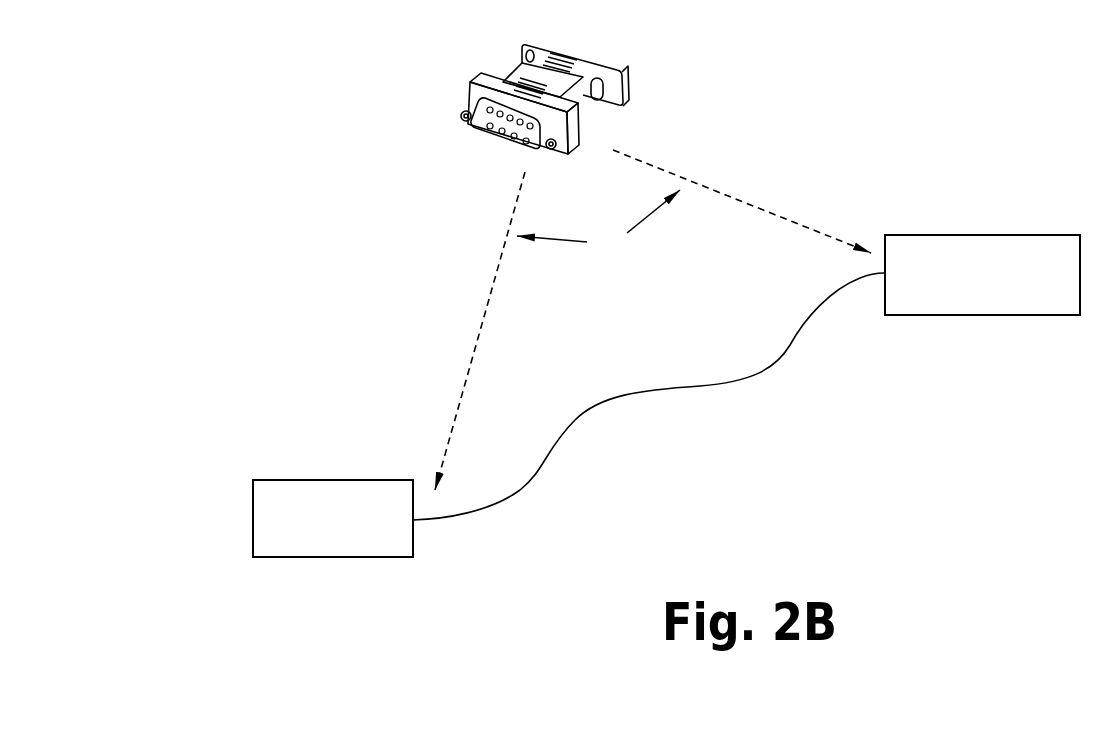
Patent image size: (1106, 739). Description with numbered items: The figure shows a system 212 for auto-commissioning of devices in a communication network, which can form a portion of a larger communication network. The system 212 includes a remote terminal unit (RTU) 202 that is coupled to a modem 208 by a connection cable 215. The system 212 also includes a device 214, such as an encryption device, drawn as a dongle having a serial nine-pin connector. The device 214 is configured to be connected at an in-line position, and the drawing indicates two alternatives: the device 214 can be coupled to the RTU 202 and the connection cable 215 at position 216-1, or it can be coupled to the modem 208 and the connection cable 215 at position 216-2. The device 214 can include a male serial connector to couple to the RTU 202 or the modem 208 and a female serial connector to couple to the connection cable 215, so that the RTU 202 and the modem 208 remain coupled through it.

The remote terminal unit (RTU) 202 is at (353, 480).
The modem 208 is at (992, 315).
The system 212 is at (967, 87).
The device 214 is at (618, 90).
The connection cable 215 is at (640, 396).
The position 216-1 is at (491, 300).
The position 216-2 is at (750, 207).